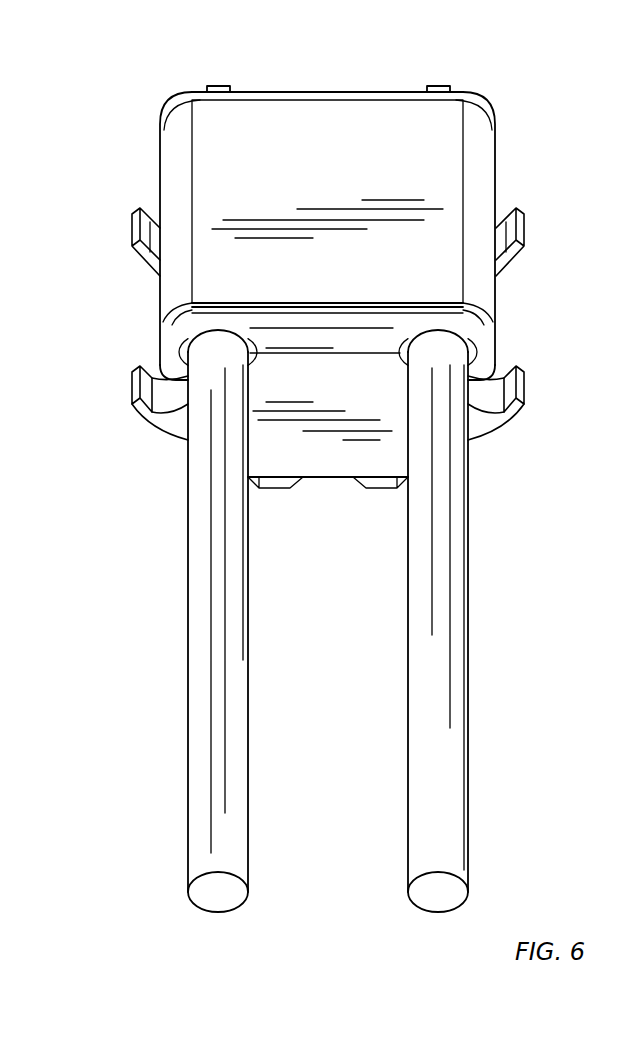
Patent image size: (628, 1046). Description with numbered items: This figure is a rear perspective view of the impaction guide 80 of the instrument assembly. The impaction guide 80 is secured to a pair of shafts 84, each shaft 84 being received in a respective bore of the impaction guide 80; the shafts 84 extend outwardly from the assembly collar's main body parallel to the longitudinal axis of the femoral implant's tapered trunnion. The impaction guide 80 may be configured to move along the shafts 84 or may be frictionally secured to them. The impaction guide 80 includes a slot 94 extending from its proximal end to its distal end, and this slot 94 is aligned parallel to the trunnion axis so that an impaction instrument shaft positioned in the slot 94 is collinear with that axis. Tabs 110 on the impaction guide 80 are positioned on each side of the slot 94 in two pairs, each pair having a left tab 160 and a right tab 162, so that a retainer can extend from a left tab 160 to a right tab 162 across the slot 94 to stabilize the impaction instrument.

The impaction guide 80 is at (354, 112).
The shaft 84 is at (236, 730).
The slot 94 is at (329, 503).
The tab 110 is at (140, 212).
The left tab 160 is at (526, 240).
The right tab 162 is at (132, 232).